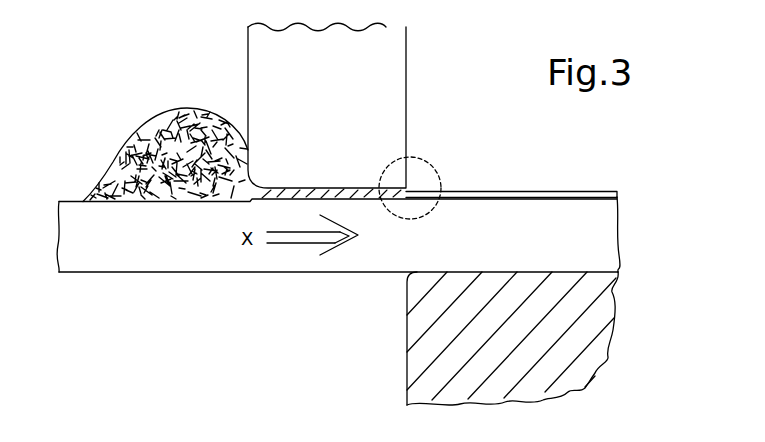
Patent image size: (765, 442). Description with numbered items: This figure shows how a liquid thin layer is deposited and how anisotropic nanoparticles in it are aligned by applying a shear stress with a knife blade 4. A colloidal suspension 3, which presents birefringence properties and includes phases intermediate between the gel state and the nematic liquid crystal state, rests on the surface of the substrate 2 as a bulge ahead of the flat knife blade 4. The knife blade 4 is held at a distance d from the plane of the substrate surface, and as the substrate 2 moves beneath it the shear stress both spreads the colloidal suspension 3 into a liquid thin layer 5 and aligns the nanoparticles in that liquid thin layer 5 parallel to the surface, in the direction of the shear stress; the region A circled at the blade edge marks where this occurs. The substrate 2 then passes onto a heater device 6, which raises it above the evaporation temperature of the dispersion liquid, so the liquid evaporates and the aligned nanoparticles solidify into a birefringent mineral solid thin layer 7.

The substrate 2 is at (121, 255).
The colloidal suspension 3 is at (151, 122).
The knife blade 4 is at (395, 90).
The liquid thin layer 5 is at (417, 182).
The heater device 6 is at (410, 340).
The birefringent mineral solid thin layer 7 is at (550, 191).
The detail region A is at (420, 160).